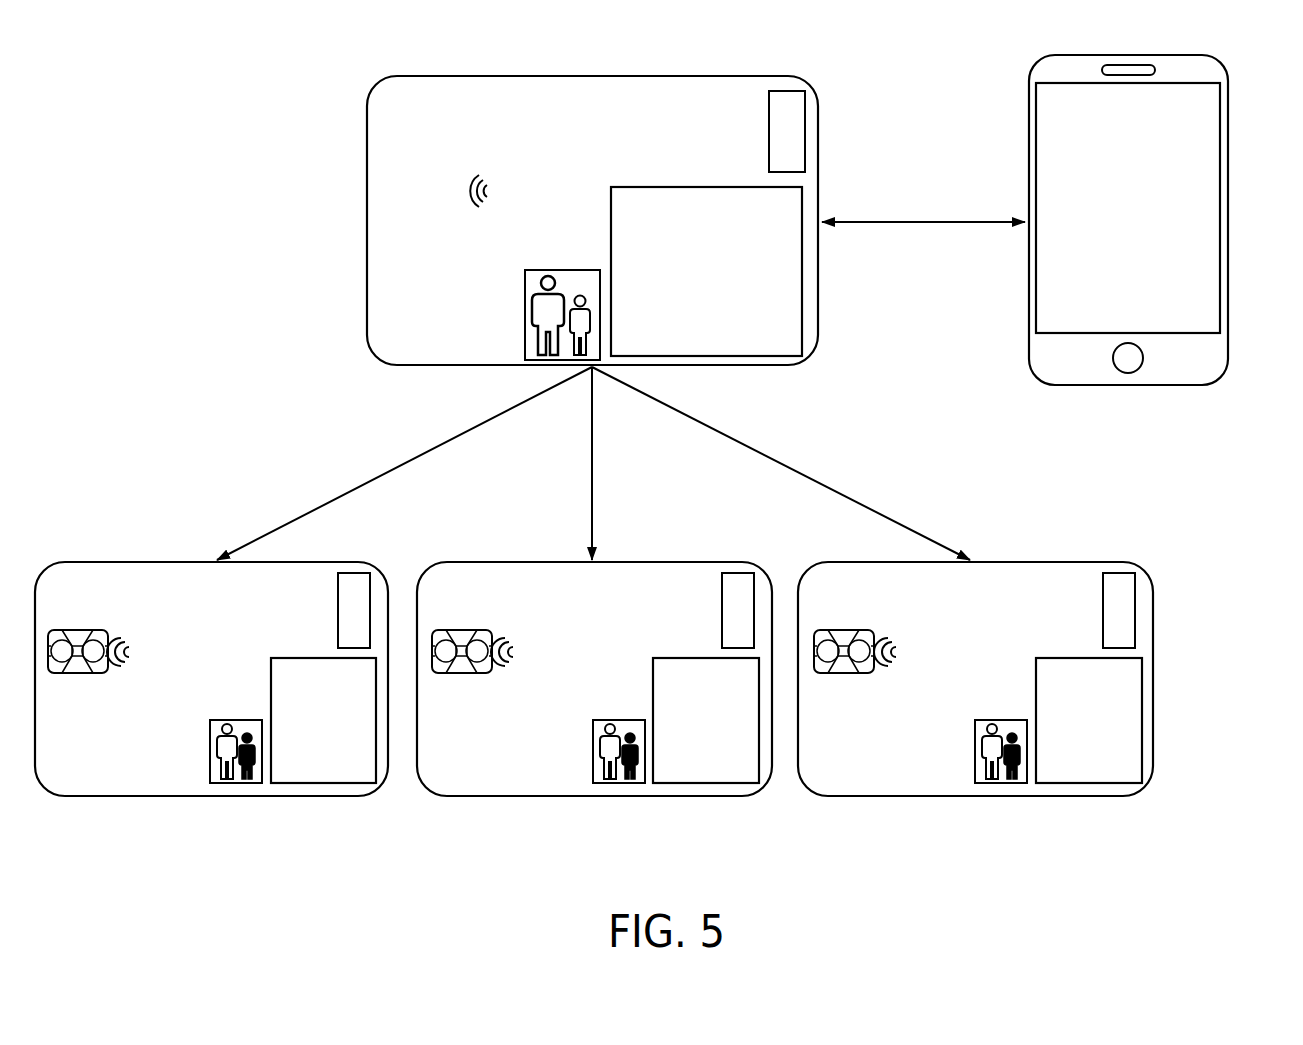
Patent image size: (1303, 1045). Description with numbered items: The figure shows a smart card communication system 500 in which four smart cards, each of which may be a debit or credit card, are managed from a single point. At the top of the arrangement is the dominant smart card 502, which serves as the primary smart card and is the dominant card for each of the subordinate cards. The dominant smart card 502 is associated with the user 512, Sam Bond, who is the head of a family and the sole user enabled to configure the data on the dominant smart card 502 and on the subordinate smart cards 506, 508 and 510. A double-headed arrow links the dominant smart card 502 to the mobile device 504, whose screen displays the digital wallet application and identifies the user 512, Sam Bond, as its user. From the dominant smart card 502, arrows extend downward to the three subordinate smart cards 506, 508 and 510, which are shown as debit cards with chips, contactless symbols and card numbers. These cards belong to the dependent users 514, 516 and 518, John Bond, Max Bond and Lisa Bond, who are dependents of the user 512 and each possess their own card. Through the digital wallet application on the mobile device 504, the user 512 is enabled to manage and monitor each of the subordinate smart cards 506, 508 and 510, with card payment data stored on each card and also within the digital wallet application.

The smart card communication system 500 is at (116, 58).
The dominant smart card 502 is at (601, 220).
The mobile device 504 is at (1228, 231).
The subordinate smart card 506 is at (211, 707).
The subordinate smart card 508 is at (594, 707).
The subordinate smart card 510 is at (975, 707).
The user 512 is at (386, 333).
The dependent user 514 is at (88, 782).
The dependent user 516 is at (500, 798).
The dependent user 518 is at (882, 798).